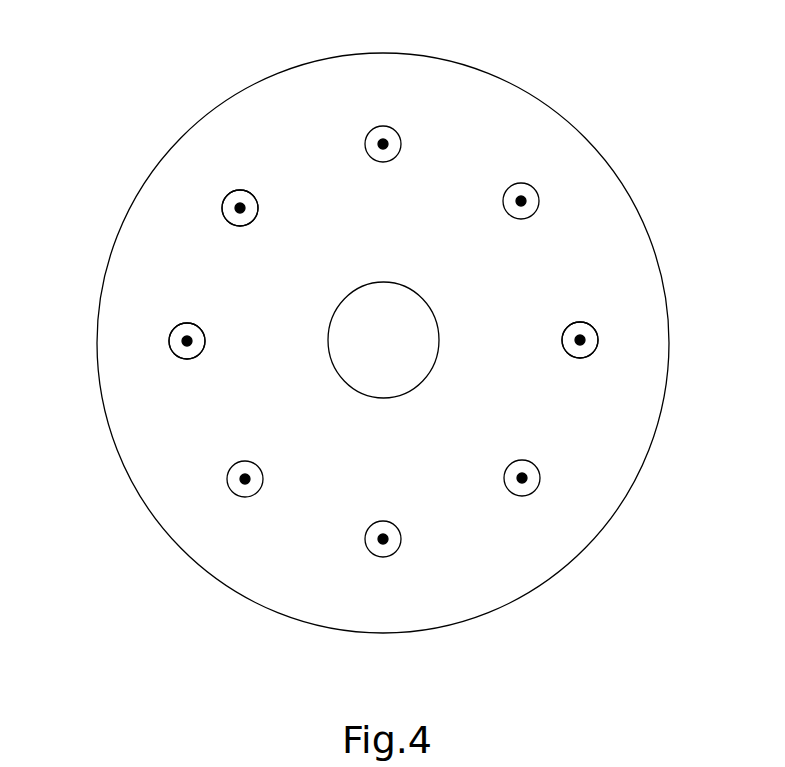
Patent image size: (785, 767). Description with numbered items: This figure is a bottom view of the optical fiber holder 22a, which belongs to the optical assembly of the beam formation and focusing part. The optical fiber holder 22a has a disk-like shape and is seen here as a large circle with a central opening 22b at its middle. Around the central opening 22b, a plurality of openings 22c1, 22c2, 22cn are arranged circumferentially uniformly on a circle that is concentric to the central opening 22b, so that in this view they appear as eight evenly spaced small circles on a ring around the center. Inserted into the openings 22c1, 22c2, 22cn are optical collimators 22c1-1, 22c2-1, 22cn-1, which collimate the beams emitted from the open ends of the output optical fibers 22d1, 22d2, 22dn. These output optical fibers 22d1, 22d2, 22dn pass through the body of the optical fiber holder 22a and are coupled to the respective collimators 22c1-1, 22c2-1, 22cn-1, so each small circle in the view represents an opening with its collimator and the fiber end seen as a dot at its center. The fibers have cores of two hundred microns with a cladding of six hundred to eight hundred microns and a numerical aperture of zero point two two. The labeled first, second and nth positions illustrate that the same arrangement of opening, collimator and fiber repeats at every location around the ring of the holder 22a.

The optical fiber holder 22a is at (615, 165).
The central opening 22b is at (374, 325).
The opening 22c1 is at (238, 208).
The optical collimator 22c1-1 is at (242, 198).
The output optical fiber 22d1 is at (238, 206).
The opening 22c2 is at (170, 341).
The optical collimator 22c2-1 is at (185, 325).
The output optical fiber 22d2 is at (182, 338).
The opening 22cn is at (587, 336).
The optical collimator 22cn-1 is at (580, 327).
The output optical fiber 22dn is at (590, 340).